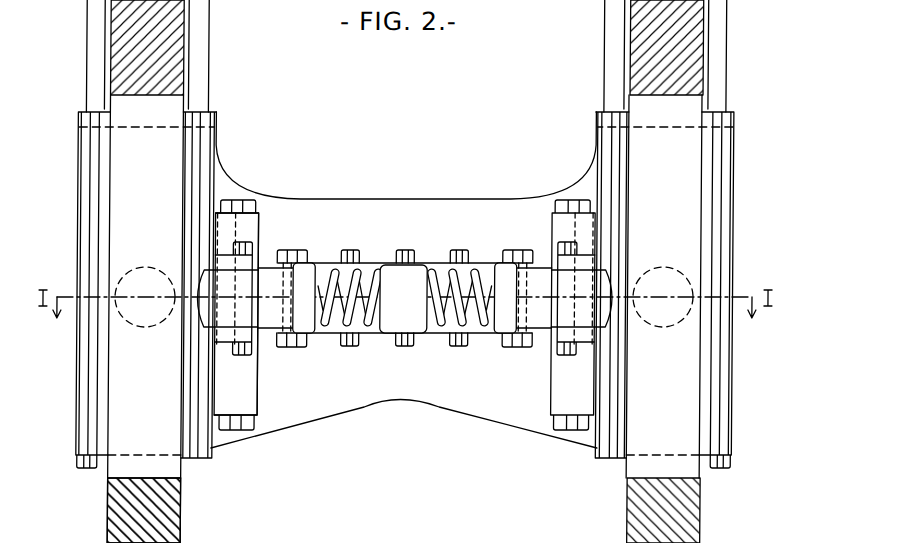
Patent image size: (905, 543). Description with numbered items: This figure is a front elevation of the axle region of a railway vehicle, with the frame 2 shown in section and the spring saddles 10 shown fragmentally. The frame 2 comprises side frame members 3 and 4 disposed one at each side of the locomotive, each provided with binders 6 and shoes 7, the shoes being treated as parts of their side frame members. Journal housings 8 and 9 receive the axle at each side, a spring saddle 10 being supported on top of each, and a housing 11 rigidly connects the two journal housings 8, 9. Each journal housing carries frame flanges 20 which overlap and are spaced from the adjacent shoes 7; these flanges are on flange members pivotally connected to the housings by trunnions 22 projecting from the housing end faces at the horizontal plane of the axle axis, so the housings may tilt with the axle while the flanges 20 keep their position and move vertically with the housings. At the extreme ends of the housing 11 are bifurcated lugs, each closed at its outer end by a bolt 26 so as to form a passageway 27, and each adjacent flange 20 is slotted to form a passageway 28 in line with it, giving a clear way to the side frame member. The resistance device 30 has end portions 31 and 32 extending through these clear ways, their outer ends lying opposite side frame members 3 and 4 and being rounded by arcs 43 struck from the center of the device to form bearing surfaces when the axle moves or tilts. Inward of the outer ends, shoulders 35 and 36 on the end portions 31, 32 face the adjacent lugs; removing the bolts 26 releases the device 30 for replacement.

The frame 2 is at (457, 531).
The side frame member 3 is at (167, 52).
The side frame member 4 is at (643, 68).
The binder 6 is at (170, 518).
The shoe 7 is at (142, 425).
The journal housing 8 is at (115, 245).
The journal housing 9 is at (690, 222).
The spring saddle 10 is at (198, 80).
The housing 11 is at (356, 200).
The frame flange 20 is at (83, 416).
The trunnion 22 is at (155, 322).
The bolt 26 is at (240, 247).
The passageway 27 is at (230, 268).
The passageway 28 is at (198, 262).
The resistance device 30 is at (413, 287).
The end portion 31 is at (268, 340).
The end portion 32 is at (502, 325).
The shoulder 35 is at (258, 345).
The shoulder 36 is at (556, 360).
The arc 43 is at (622, 320).